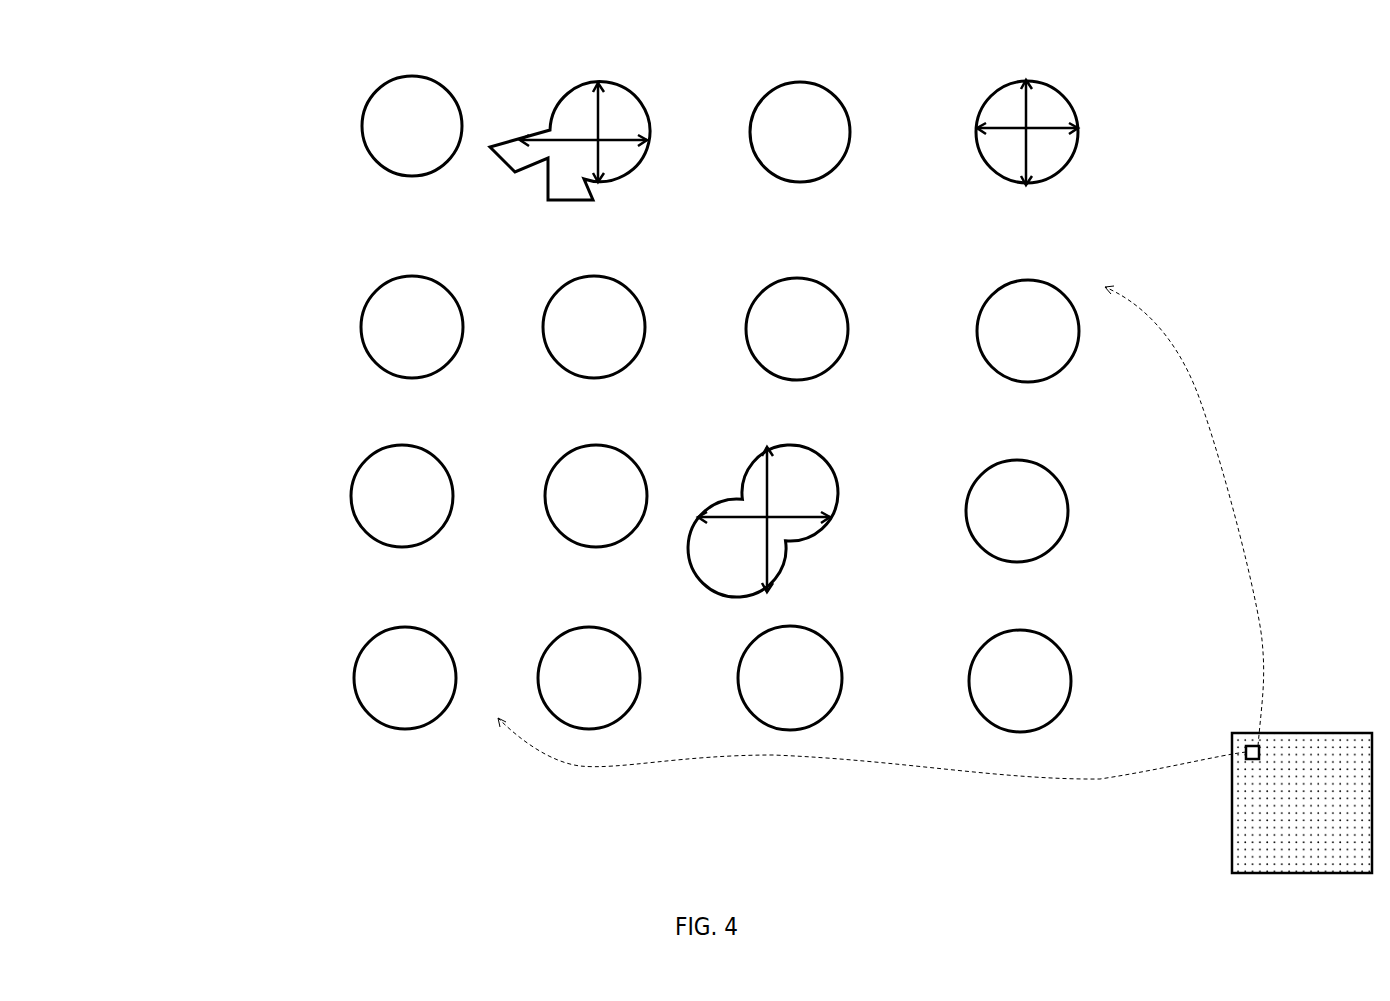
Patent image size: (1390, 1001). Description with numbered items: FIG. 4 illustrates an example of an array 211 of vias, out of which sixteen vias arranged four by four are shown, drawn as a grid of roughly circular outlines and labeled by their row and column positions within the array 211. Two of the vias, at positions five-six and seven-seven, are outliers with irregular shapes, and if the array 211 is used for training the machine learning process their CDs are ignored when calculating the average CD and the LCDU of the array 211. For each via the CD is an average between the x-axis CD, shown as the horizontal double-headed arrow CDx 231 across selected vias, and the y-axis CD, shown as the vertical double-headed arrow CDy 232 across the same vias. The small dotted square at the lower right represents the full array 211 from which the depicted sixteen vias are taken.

The array of vias 211 is at (1313, 873).
The x-axis CD (CDx) 231 is at (570, 140).
The y-axis CD (CDy) 232 is at (677, 62).